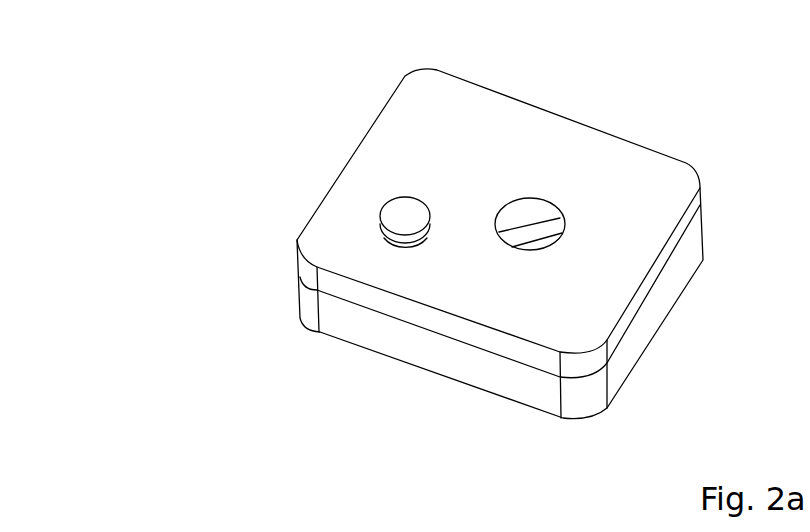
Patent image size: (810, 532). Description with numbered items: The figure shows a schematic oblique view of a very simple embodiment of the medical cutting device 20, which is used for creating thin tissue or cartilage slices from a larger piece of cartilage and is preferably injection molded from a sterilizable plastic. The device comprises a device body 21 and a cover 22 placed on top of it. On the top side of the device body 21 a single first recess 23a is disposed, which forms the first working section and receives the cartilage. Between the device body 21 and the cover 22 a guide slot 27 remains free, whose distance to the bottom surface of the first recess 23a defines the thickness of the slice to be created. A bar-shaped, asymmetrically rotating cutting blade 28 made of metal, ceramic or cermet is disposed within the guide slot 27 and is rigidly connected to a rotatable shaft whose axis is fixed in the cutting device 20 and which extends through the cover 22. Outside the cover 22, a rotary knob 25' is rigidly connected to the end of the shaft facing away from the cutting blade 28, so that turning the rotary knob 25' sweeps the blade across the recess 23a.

The medical cutting device 20 is at (228, 97).
The device body 21 is at (377, 333).
The cover 22 is at (363, 183).
The first recess 23a is at (520, 222).
The rotary knob 25' is at (306, 253).
The guide slot 27 is at (642, 302).
The cutting blade 28 is at (533, 232).